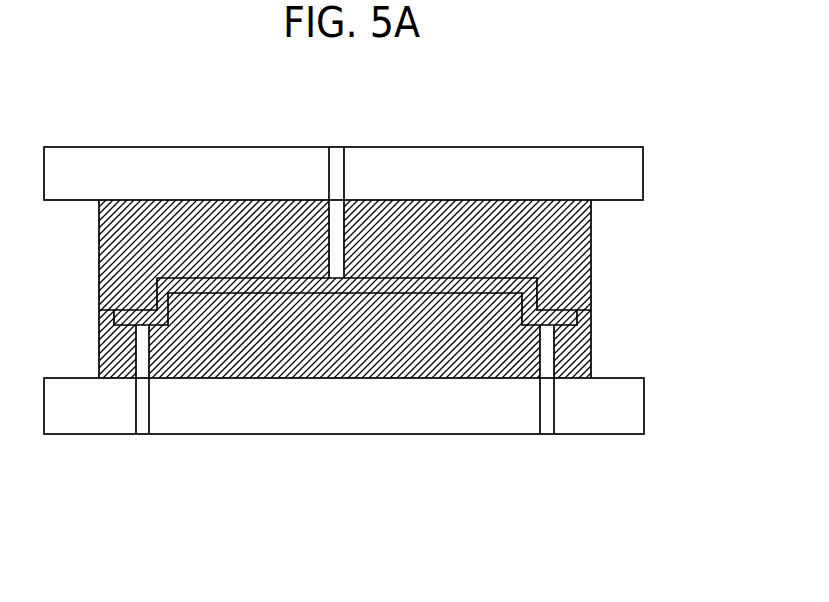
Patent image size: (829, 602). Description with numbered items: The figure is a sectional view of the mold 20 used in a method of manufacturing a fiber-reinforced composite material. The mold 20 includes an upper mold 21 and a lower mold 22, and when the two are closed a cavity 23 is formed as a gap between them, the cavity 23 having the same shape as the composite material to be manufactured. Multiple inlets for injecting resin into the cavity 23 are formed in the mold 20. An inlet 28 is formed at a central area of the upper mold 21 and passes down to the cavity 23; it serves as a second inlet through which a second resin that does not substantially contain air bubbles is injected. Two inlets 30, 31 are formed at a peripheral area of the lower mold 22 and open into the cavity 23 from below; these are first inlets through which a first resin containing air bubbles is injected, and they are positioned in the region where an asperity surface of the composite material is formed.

The mold 20 is at (91, 107).
The upper mold 21 is at (591, 247).
The lower mold 22 is at (591, 342).
The cavity 23 is at (570, 314).
The inlet 28 is at (336, 158).
The inlet 30 is at (145, 423).
The inlet 31 is at (548, 423).